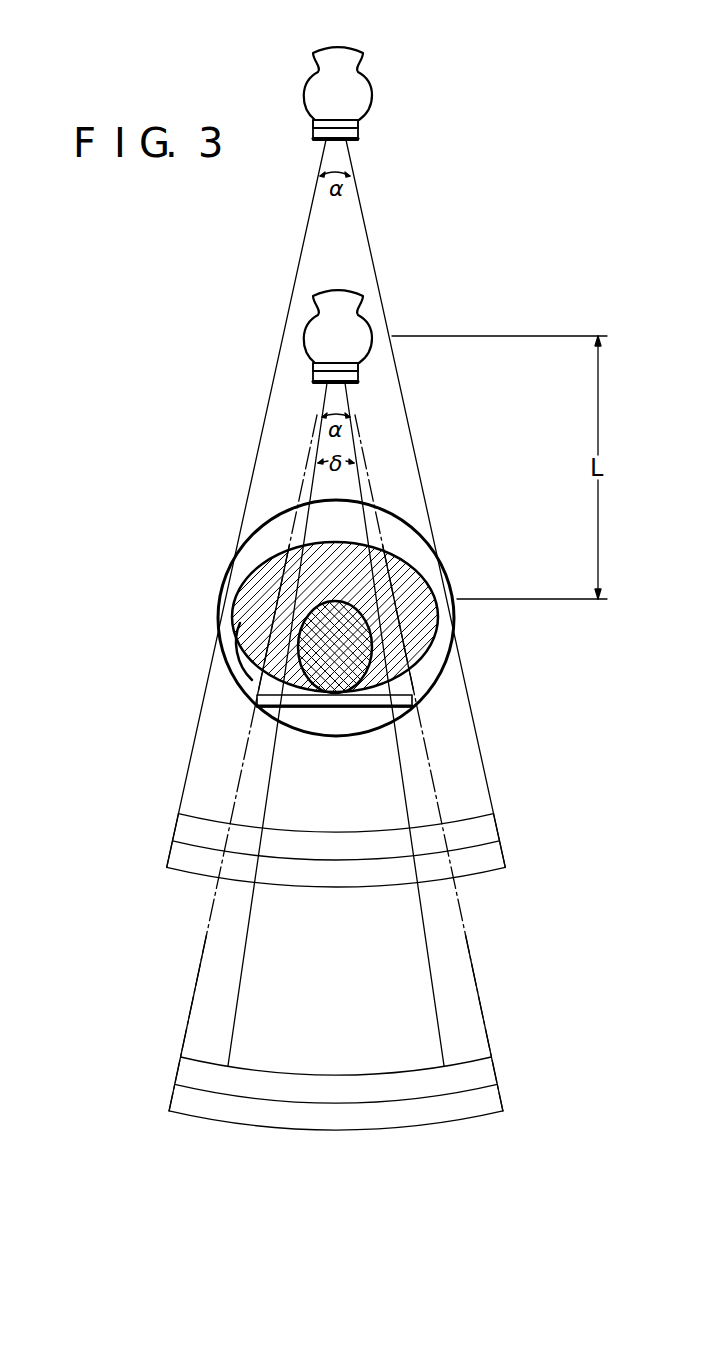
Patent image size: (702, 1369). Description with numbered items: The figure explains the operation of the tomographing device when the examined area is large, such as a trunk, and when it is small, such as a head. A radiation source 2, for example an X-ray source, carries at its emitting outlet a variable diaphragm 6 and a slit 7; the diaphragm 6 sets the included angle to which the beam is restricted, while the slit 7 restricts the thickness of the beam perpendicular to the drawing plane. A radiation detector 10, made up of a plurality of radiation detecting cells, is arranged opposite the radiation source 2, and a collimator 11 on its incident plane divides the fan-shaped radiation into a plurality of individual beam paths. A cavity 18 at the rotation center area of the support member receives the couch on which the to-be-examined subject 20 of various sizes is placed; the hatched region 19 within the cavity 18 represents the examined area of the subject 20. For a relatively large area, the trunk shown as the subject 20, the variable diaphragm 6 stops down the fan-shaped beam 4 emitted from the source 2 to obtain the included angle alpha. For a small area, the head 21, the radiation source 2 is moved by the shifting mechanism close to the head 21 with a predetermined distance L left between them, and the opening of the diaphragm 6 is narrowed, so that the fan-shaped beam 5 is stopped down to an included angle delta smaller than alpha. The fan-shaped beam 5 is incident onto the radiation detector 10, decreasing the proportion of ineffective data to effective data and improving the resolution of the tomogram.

The radiation source 2 is at (360, 97).
The fan-shaped beam of penetrating radiation 4 is at (368, 238).
The fan-shaped beam 5 is at (399, 757).
The diaphragm 6 is at (318, 136).
The slit 7 is at (358, 124).
The radiation detector 10 is at (487, 852).
The collimator 11 is at (484, 829).
The cavity 18 is at (391, 513).
The illuminated area 19 is at (421, 594).
The to-be-examined subject 20 is at (240, 623).
The head 21 is at (320, 696).